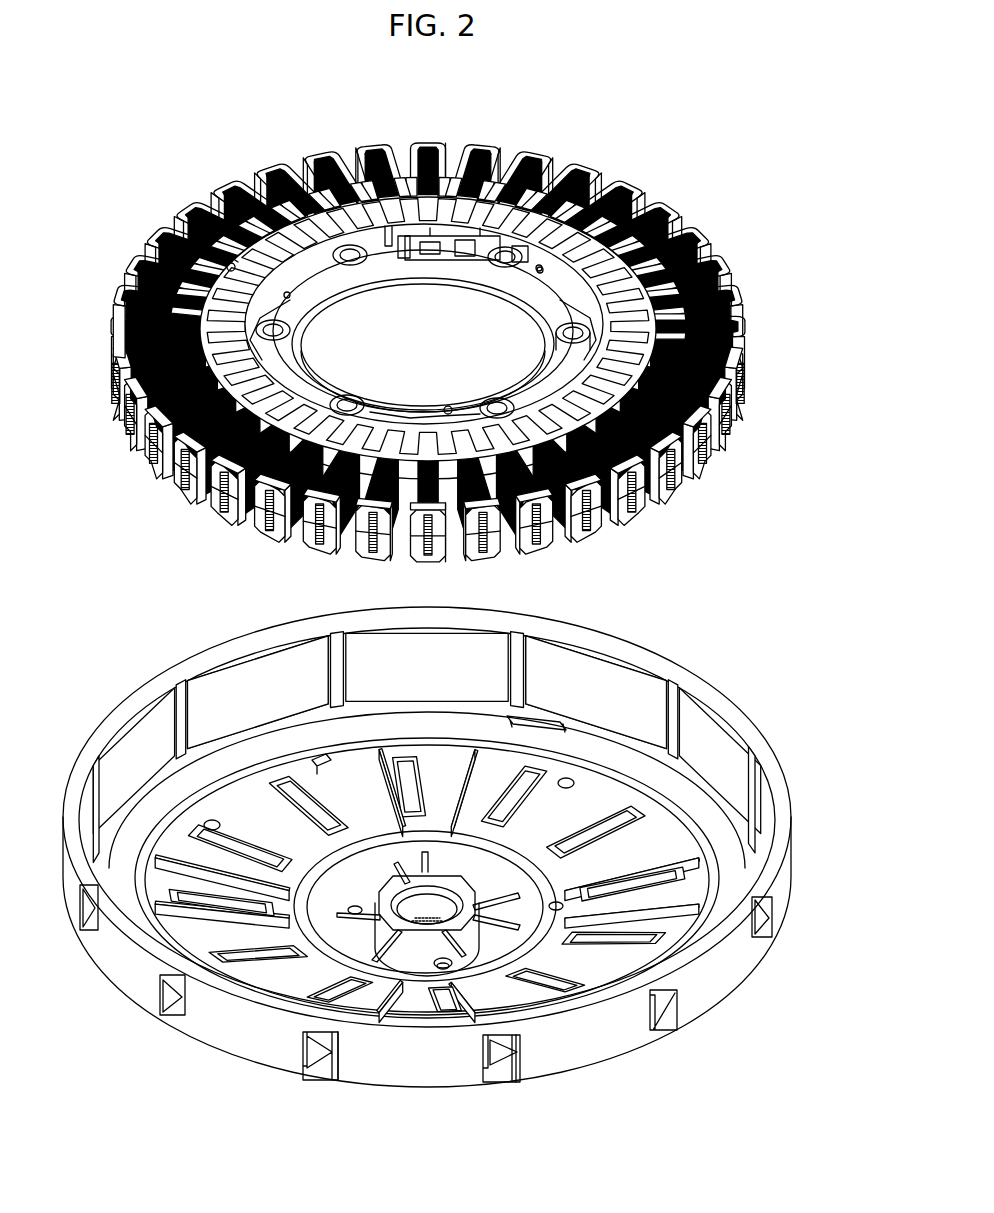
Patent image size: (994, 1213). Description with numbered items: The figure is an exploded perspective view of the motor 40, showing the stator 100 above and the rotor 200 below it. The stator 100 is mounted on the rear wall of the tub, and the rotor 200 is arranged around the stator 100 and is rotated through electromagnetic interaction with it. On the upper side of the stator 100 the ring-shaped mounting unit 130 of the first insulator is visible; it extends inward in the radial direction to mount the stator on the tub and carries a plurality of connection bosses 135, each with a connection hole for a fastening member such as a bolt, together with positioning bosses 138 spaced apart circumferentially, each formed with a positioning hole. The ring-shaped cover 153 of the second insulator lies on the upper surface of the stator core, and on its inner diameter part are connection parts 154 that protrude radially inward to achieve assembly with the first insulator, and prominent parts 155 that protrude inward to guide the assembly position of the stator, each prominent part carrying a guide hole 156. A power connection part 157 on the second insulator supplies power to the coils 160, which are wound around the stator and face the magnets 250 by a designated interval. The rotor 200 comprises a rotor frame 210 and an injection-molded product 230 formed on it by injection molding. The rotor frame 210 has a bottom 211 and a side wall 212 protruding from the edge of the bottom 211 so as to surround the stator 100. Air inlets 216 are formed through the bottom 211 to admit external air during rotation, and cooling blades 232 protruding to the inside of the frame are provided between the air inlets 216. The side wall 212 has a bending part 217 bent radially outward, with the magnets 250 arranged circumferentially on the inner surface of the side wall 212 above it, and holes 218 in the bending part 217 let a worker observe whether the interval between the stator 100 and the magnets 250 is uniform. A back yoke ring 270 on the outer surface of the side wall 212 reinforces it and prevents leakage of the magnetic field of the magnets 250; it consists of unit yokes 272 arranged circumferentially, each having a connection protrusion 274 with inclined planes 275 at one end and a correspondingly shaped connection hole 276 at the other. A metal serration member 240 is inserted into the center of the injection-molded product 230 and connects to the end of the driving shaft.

The motor 40 is at (394, 104).
The stator 100 is at (702, 210).
The coils 160 is at (130, 264).
The mounting unit 130 is at (306, 330).
The connection bosses 135 is at (537, 361).
The positioning bosses 138 is at (392, 224).
The cover 153 is at (458, 218).
The connection parts 154 is at (400, 240).
The prominent parts 155 is at (570, 284).
The guide hole 156 is at (536, 271).
The power connection part 157 is at (232, 270).
The rotor 200 is at (726, 652).
The rotor frame 210 is at (728, 716).
The bottom 211 is at (258, 784).
The side wall 212 is at (336, 632).
The air inlets 216 is at (320, 762).
The bending part 217 is at (614, 732).
The holes 218 is at (533, 714).
The injection-molded product 230 is at (509, 830).
The cooling blades 232 is at (473, 746).
The serration member 240 is at (432, 893).
The magnets 250 is at (584, 666).
The back yoke ring 270 is at (208, 1062).
The unit yokes 272 is at (360, 1073).
The connection protrusion 274 is at (508, 1062).
The inclined planes 275 is at (515, 1041).
The connection hole 276 is at (493, 1067).